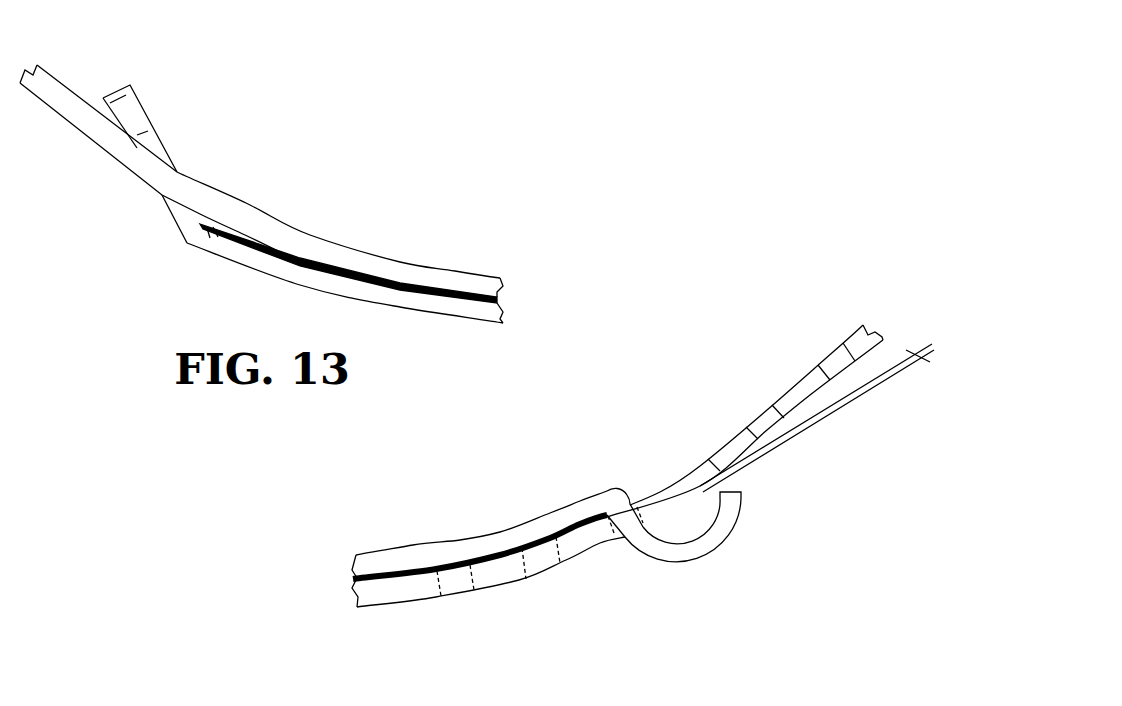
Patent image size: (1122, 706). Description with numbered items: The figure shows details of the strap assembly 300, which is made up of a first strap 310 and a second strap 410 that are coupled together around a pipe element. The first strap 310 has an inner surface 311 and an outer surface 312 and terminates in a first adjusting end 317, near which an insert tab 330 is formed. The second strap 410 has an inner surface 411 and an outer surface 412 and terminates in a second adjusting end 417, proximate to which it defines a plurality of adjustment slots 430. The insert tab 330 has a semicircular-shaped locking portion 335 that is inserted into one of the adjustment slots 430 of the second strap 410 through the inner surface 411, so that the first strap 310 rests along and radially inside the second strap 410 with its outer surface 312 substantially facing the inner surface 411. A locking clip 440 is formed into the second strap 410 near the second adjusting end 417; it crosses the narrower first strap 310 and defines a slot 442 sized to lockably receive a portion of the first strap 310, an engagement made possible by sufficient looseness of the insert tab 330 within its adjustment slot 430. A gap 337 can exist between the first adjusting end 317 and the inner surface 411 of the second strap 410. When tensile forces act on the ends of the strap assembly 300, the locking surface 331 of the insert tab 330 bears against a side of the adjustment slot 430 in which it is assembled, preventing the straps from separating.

In FIG. 13, the strap assembly 300 is at (250, 90).
In FIG. 14, the strap assembly 300 is at (677, 355).
In FIG. 13, the first strap 310 is at (455, 271).
In FIG. 14, the first strap 310 is at (550, 513).
In FIG. 13, the inner surface of the first strap 311 is at (313, 232).
In FIG. 14, the inner surface of the first strap 311 is at (413, 544).
In FIG. 13, the outer surface of the first strap 312 is at (66, 125).
In FIG. 14, the outer surface of the first strap 312 is at (386, 589).
In FIG. 14, the first adjusting end 317 is at (733, 483).
In FIG. 14, the insert tab 330 is at (740, 515).
In FIG. 14, the locking surface 331 is at (612, 524).
In FIG. 14, the semicircular-shaped locking portion 335 is at (707, 557).
In FIG. 14, the gap 337 is at (928, 372).
In FIG. 13, the second strap 410 is at (240, 262).
In FIG. 14, the second strap 410 is at (788, 392).
In FIG. 13, the inner surface of the second strap 411 is at (397, 280).
In FIG. 14, the inner surface of the second strap 411 is at (490, 557).
In FIG. 13, the outer surface of the second strap 412 is at (172, 218).
In FIG. 14, the outer surface of the second strap 412 is at (817, 414).
In FIG. 13, the second adjusting end 417 is at (110, 92).
In FIG. 14, the adjustment slot 430 is at (760, 418).
In FIG. 13, the locking clip 440 is at (165, 150).
In FIG. 13, the slot 442 is at (205, 232).